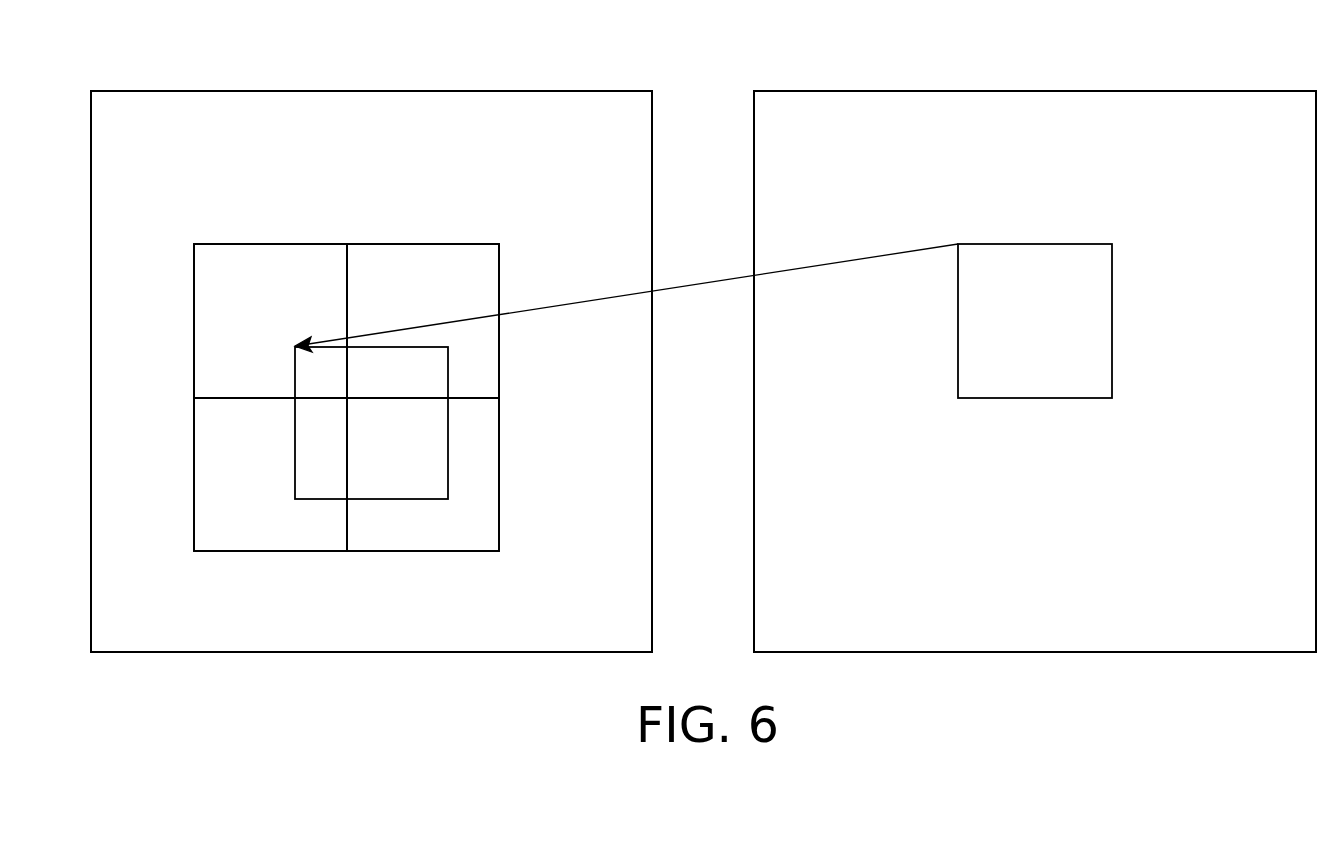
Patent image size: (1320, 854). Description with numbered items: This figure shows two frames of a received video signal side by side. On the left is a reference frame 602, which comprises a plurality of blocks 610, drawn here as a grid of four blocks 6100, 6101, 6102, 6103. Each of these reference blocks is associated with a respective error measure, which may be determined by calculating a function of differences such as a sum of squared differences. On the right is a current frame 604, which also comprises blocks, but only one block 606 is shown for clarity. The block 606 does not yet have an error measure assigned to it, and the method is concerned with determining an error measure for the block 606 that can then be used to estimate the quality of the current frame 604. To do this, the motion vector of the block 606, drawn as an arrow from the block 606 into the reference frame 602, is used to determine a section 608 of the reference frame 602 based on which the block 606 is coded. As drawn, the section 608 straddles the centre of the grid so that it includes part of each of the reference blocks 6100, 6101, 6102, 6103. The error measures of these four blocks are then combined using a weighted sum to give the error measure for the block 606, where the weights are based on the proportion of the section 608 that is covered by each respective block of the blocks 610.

The reference frame 602 is at (371, 91).
The current frame 604 is at (1034, 91).
The block 606 is at (1034, 244).
The section 608 is at (449, 442).
The blocks 610 is at (346, 401).
The block 6100 is at (271, 244).
The block 6101 is at (424, 244).
The block 6102 is at (427, 552).
The block 6103 is at (273, 552).